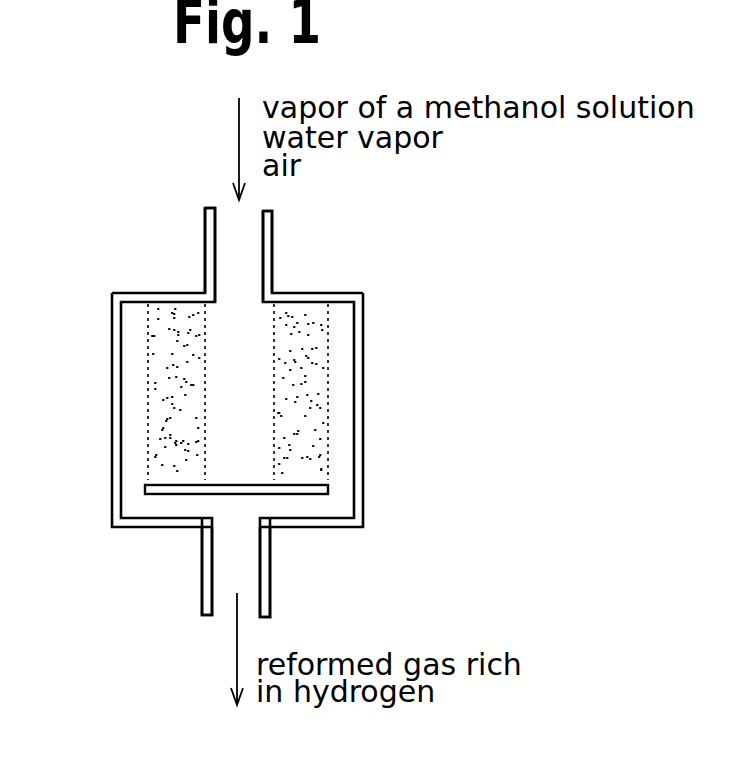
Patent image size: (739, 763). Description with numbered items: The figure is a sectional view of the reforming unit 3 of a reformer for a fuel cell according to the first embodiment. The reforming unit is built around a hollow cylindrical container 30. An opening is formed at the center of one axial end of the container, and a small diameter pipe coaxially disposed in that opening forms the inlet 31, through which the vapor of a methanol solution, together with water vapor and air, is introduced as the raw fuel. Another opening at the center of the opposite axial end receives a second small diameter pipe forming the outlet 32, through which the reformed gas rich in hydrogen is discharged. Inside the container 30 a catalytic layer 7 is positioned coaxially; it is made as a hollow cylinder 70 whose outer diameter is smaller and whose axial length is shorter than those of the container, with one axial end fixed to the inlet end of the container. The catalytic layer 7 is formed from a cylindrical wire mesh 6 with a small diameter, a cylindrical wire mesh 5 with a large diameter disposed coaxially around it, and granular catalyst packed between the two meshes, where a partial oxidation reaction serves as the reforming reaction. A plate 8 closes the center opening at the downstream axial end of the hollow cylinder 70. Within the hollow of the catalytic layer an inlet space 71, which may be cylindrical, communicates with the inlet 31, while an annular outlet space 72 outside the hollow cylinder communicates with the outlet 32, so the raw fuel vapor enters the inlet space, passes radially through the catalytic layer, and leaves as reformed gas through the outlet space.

The reforming unit 3 is at (247, 412).
The hollow cylindrical container 30 is at (418, 453).
The inlet 31 is at (330, 233).
The outlet 32 is at (318, 570).
The cylindrical wire mesh with a large diameter 5 is at (412, 357).
The cylindrical wire mesh with a small diameter 6 is at (422, 403).
The catalytic layer 7 is at (252, 410).
The hollow cylinder 70 is at (410, 492).
The inlet space 71 is at (238, 398).
The annular outlet space 72 is at (132, 472).
The plate 8 is at (137, 548).